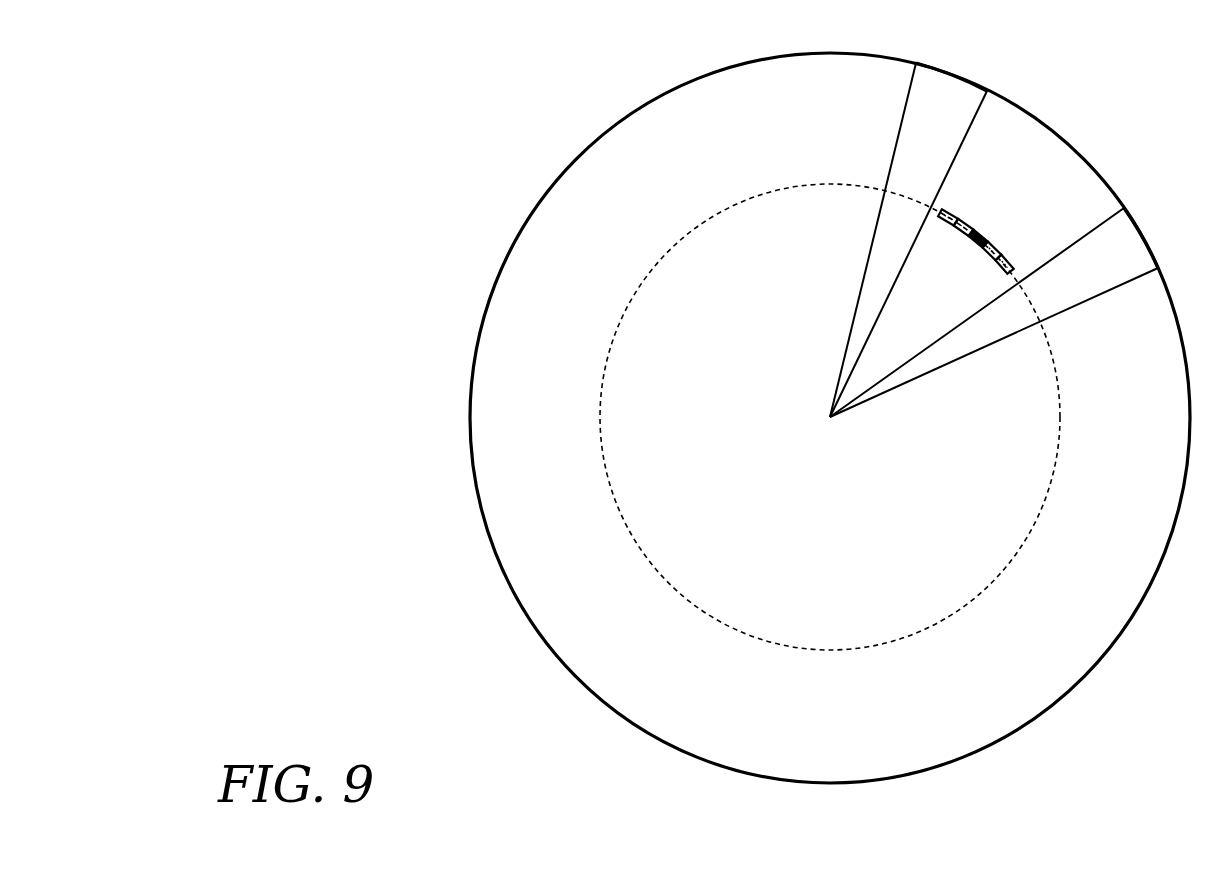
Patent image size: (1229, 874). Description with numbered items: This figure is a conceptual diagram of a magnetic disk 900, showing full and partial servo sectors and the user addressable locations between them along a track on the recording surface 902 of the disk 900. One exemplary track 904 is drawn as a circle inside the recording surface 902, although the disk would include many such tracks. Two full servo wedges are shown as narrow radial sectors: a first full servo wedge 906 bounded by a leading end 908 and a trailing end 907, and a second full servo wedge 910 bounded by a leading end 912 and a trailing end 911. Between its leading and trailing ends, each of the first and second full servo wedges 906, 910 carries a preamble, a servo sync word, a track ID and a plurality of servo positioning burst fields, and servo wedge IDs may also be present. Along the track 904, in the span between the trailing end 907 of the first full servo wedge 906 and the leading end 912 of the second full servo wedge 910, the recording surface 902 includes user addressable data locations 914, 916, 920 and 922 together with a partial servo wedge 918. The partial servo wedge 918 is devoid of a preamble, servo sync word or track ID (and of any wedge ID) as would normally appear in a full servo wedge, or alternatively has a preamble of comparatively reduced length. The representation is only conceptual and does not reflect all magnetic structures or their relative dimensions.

The disk 900 is at (500, 163).
The recording surface 902 is at (648, 130).
The track 904 is at (768, 190).
The first full servo wedge 906 is at (952, 85).
The trailing end 907 is at (980, 112).
The leading end 908 is at (910, 80).
The second full servo wedge 910 is at (1135, 238).
The trailing end 911 is at (1150, 274).
The leading end 912 is at (1105, 200).
The user addressable data location 914 is at (950, 216).
The user addressable data location 916 is at (965, 228).
The partial servo wedge 918 is at (982, 240).
The user addressable data location 920 is at (995, 253).
The user addressable data location 922 is at (1008, 266).